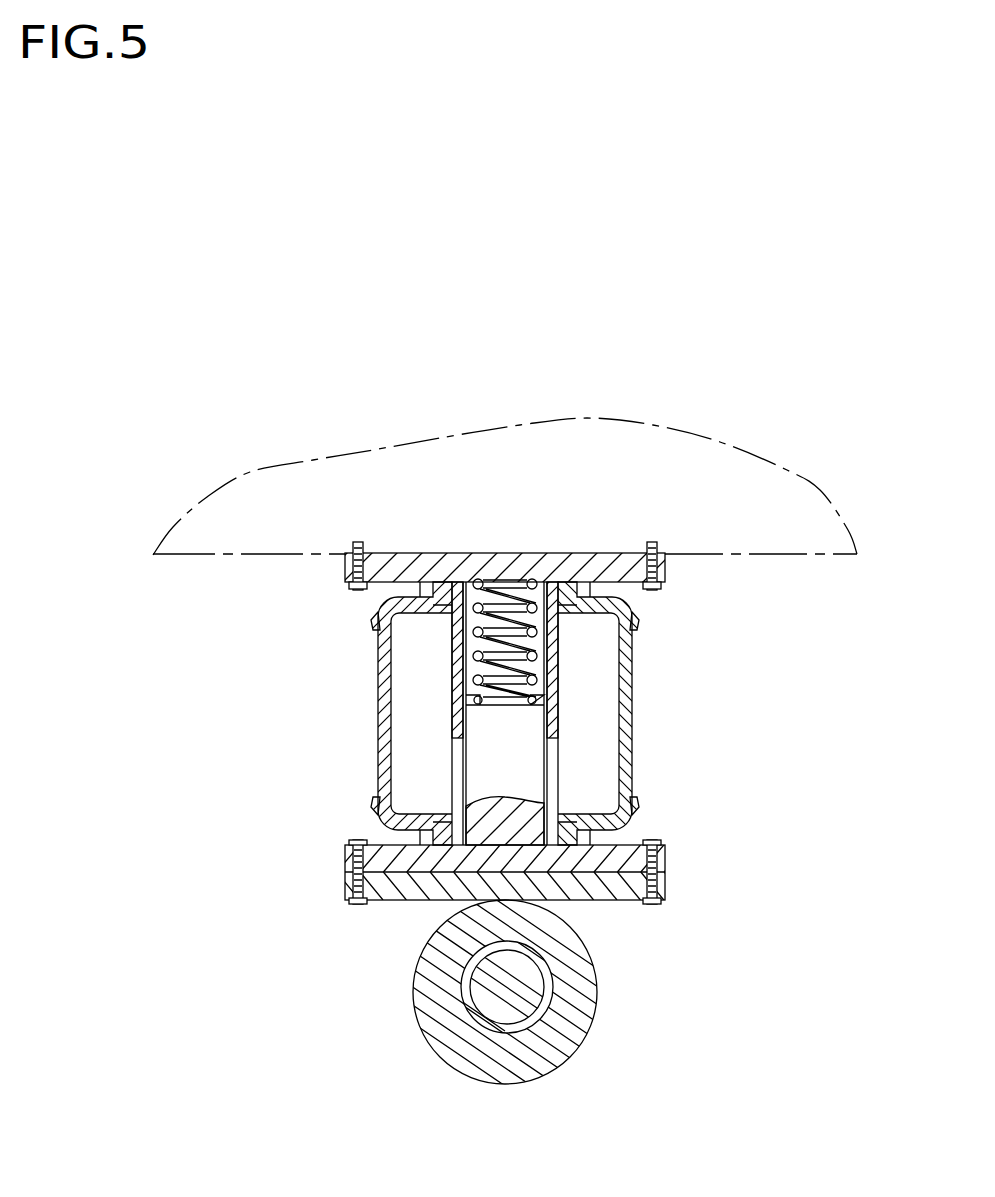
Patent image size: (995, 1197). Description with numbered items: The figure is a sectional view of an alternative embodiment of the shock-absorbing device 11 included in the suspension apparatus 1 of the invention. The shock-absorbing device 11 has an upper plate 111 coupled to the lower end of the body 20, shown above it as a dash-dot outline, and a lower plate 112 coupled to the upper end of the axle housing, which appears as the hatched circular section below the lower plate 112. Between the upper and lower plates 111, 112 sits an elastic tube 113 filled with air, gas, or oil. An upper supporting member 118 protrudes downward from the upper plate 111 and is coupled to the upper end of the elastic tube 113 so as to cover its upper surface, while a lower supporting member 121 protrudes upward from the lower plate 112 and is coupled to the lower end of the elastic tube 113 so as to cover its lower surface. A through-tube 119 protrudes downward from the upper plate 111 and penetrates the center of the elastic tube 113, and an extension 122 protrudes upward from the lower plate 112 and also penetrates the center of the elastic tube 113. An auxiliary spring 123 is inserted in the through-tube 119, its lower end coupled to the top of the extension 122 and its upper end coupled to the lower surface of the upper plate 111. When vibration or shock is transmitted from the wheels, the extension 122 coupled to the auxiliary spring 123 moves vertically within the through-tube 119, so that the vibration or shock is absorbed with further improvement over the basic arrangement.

The display device 1 is at (324, 836).
The shock-absorbing device 11 is at (819, 625).
The body 20 is at (780, 542).
The upper plate 111 is at (668, 573).
The lower plate 112 is at (672, 845).
The elastic tube 113 is at (632, 696).
The upper supporting member 118 is at (372, 617).
The through-tube 119 is at (466, 708).
The lower supporting member 121 is at (372, 803).
The extension 122 is at (478, 761).
The auxiliary spring 123 is at (490, 665).